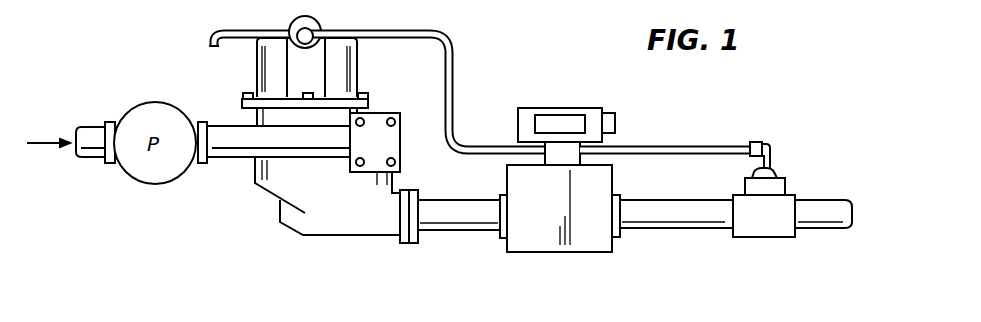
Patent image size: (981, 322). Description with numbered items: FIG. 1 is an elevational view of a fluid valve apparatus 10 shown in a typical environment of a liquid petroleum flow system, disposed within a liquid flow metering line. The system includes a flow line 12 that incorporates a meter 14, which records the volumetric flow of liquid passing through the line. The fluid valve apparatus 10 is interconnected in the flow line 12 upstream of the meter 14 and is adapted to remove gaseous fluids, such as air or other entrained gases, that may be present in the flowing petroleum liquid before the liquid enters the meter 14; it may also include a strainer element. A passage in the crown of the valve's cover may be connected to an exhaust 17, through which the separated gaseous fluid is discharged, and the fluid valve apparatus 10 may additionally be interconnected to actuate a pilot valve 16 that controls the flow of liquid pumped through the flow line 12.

The fluid valve apparatus 10 is at (362, 73).
The flow line 12 is at (461, 232).
The meter 14 is at (577, 241).
The pilot valve 16 is at (785, 185).
The exhaust 17 is at (209, 48).